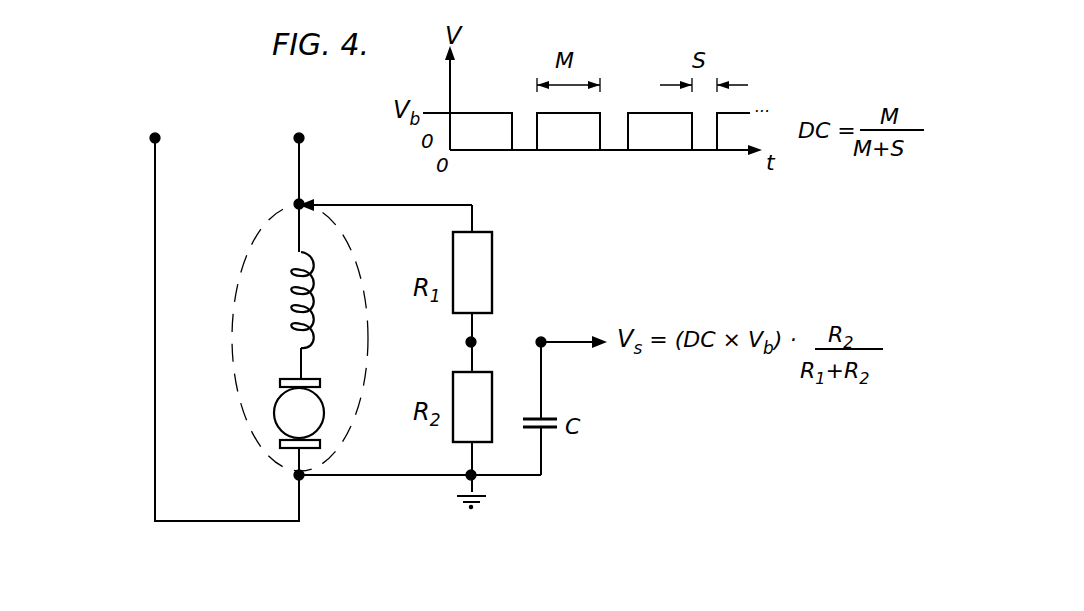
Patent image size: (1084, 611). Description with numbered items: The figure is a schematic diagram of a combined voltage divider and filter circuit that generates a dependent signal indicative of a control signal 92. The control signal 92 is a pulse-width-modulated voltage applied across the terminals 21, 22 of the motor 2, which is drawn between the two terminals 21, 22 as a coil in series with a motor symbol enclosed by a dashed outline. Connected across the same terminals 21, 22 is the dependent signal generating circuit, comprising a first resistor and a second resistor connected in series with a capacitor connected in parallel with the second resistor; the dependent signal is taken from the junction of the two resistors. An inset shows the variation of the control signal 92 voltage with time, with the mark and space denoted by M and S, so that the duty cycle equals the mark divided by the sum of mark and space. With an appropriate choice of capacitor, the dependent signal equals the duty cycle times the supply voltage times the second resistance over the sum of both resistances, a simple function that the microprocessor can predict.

The control signal 92 is at (229, 122).
The motor terminal 21 is at (304, 200).
The motor 2 is at (241, 277).
The motor terminal 22 is at (296, 476).